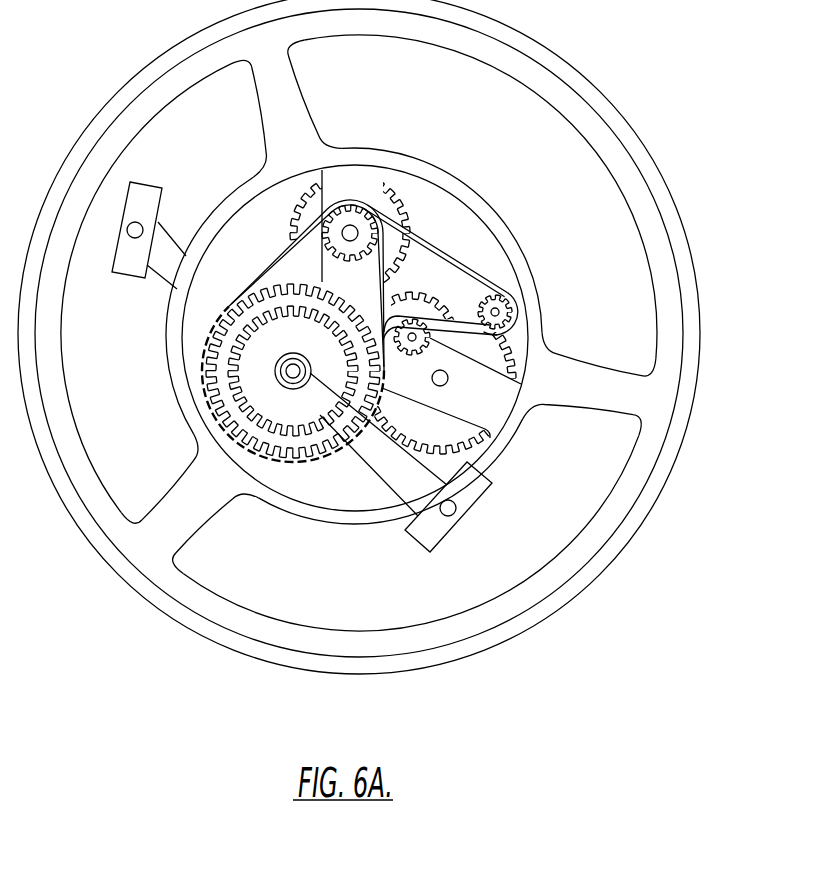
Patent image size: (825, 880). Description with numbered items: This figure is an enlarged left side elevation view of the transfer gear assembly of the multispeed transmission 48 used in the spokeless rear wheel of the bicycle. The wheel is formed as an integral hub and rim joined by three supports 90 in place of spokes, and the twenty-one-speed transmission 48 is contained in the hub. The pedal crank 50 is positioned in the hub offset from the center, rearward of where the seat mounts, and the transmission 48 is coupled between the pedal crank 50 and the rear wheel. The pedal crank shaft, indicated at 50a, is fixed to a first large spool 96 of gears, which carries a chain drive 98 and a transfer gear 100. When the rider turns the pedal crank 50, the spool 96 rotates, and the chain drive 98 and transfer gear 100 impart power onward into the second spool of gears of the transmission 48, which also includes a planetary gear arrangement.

The multispeed transmission 48 is at (540, 215).
The pedal crank 50 is at (407, 482).
The hub shaft 50a is at (292, 389).
The support 90 is at (565, 368).
The first large spool of gears 96 is at (262, 440).
The chain drive 98 is at (513, 268).
The transfer gear 100 is at (368, 211).